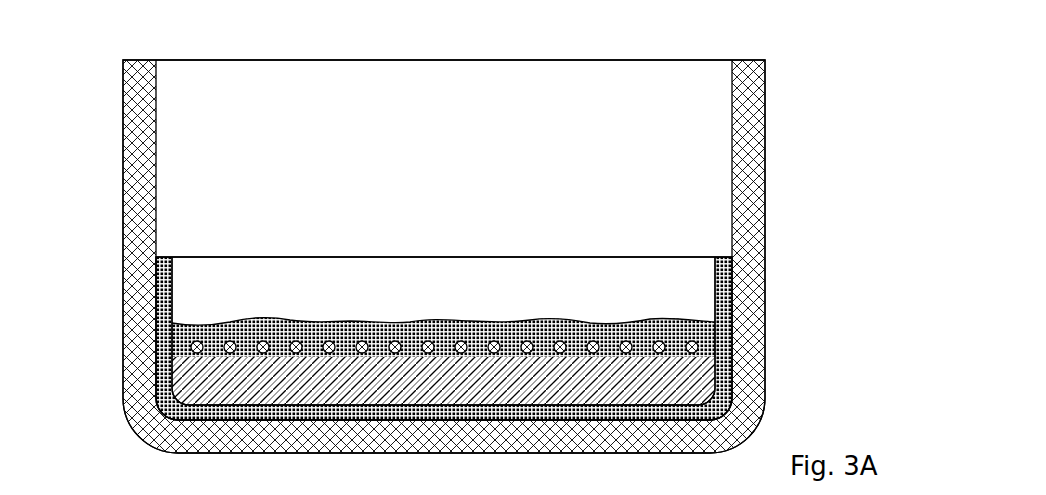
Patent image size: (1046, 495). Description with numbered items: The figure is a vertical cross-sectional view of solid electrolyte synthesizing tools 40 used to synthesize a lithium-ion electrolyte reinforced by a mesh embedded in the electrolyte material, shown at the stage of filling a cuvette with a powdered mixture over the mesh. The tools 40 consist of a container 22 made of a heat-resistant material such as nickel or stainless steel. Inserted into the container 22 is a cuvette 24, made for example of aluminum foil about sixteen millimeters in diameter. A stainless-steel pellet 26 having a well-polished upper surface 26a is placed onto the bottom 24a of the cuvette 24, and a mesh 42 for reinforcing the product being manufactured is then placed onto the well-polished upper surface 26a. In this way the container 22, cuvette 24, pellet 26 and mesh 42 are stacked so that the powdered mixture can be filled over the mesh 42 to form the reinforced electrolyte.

The solid electrolyte synthesizing tools 40 is at (844, 79).
The container 22 is at (130, 168).
The cuvette 24 is at (158, 277).
The bottom of the cuvette 24a is at (665, 400).
The stainless-steel pellet 26 is at (187, 370).
The well-polished upper surface 26a is at (202, 322).
The mesh 42 is at (710, 337).